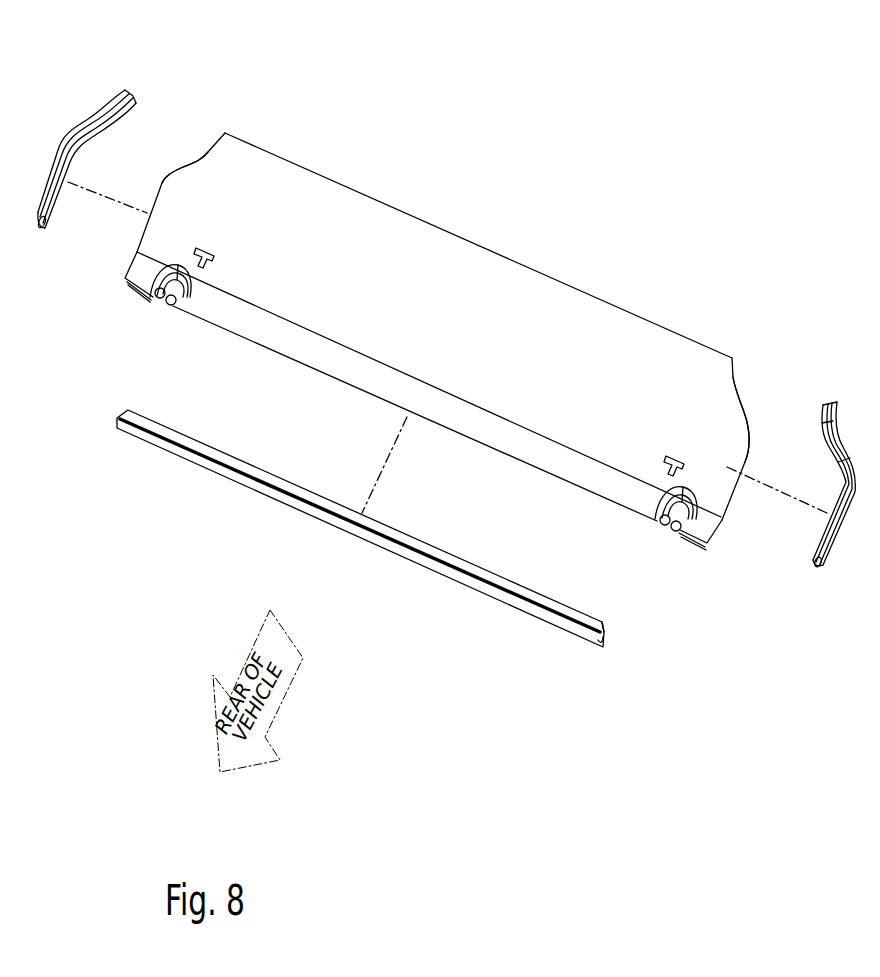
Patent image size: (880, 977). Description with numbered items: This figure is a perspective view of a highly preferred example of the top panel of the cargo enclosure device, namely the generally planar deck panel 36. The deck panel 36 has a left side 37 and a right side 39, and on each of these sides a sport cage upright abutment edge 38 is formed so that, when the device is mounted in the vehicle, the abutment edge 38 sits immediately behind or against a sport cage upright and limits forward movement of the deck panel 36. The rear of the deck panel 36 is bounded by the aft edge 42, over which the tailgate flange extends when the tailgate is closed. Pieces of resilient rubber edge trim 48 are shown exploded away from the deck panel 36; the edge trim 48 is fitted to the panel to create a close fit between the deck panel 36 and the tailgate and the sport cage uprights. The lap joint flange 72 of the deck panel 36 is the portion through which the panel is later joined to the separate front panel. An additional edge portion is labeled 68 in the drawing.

The deck panel 36 is at (424, 295).
The left side of the deck panel 37 is at (226, 198).
The sport cage upright abutment edge 38 is at (208, 152).
The right side of the deck panel 39 is at (724, 437).
The aft edge of the deck panel 42 is at (313, 374).
The resilient rubber edge trim 48 is at (92, 115).
The top edge of panel 68 is at (653, 323).
The lap joint flange 72 is at (743, 380).